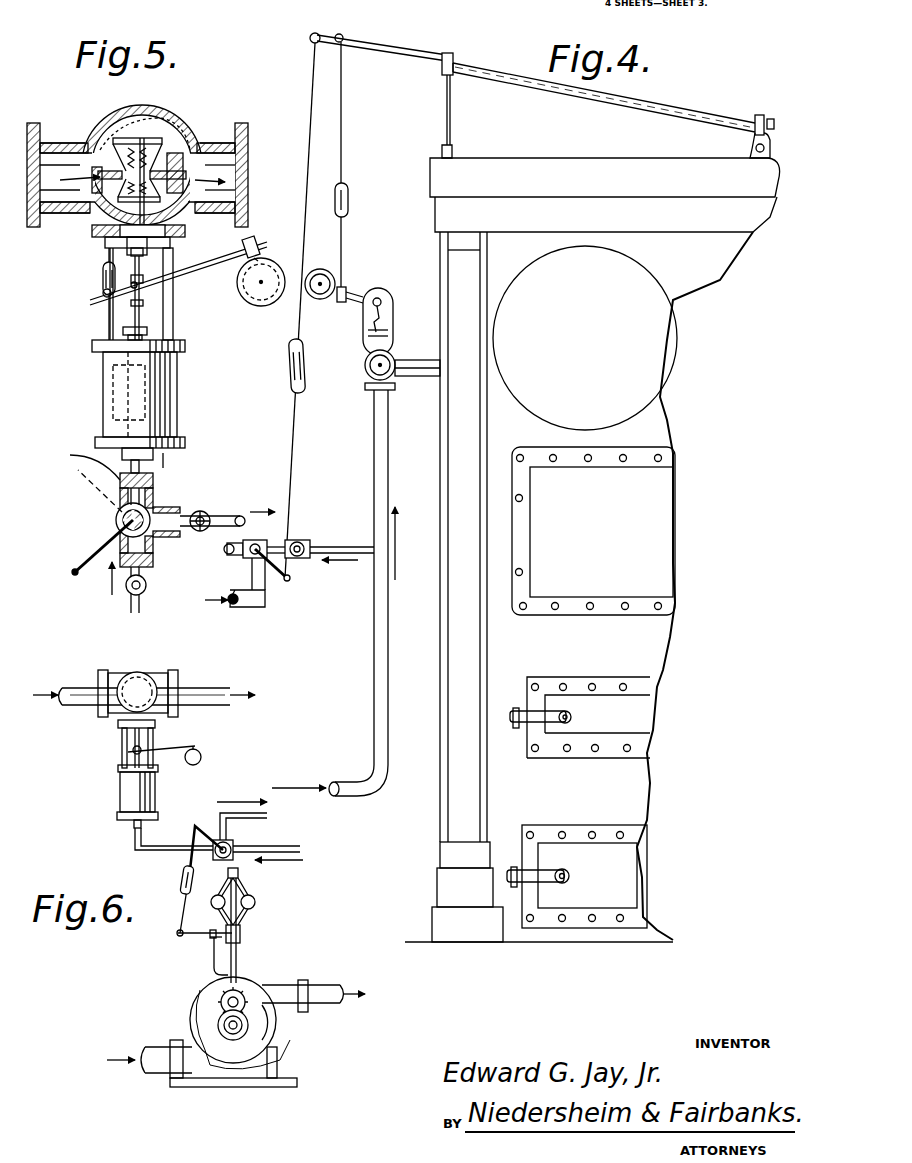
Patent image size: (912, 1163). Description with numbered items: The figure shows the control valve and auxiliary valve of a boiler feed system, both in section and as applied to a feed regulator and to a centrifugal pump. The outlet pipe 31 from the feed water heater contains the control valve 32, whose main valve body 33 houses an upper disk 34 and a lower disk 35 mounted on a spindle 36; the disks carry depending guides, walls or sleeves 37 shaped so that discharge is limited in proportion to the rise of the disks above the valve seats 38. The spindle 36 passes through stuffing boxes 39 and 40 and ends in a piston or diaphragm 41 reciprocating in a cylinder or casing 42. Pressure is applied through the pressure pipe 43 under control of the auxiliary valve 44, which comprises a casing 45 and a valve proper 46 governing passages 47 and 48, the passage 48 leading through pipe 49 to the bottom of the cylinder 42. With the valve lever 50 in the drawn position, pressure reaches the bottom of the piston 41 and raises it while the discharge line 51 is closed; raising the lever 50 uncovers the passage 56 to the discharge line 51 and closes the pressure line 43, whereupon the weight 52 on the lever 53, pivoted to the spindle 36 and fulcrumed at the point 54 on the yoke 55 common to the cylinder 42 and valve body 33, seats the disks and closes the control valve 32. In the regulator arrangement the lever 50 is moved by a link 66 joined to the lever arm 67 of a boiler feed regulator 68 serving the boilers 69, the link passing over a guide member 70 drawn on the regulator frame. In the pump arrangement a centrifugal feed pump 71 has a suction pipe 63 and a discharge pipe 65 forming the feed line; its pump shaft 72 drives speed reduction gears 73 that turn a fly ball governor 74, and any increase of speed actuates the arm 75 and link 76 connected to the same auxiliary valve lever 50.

In FIG. 5, the outlet pipe 31 is at (66, 178).
In FIG. 6, the outlet pipe 31 is at (75, 686).
In FIG. 5, the control valve 32 is at (148, 130).
In FIG. 6, the control valve 32 is at (133, 680).
In FIG. 5, the main valve body 33 is at (186, 175).
In FIG. 5, the upper disk 34 is at (108, 137).
In FIG. 5, the lower disk 35 is at (168, 172).
In FIG. 5, the spindle 36 is at (127, 244).
In FIG. 6, the spindle 36 is at (120, 737).
In FIG. 5, the depending guides, walls or sleeves 37 is at (132, 138).
In FIG. 5, the valve seats 38 is at (100, 132).
In FIG. 5, the stuffing box 39 is at (106, 262).
In FIG. 5, the stuffing box 40 is at (125, 332).
In FIG. 5, the piston or diaphragm 41 is at (113, 375).
In FIG. 5, the cylinder or casing 42 is at (177, 383).
In FIG. 6, the cylinder or casing 42 is at (120, 793).
In FIG. 5, the pressure pipe 43 is at (142, 597).
In FIG. 4, the pressure pipe 43 is at (329, 545).
In FIG. 6, the pressure pipe 43 is at (292, 846).
In FIG. 5, the auxiliary valve 44 is at (115, 522).
In FIG. 4, the auxiliary valve 44 is at (276, 540).
In FIG. 6, the auxiliary valve 44 is at (233, 846).
In FIG. 5, the casing 45 is at (150, 548).
In FIG. 5, the valve proper 46 is at (117, 518).
In FIG. 5, the passage 47 is at (160, 512).
In FIG. 5, the passage 48 is at (78, 461).
In FIG. 5, the pipe 49 is at (118, 478).
In FIG. 4, the pipe 49 is at (248, 560).
In FIG. 6, the pipe 49 is at (174, 836).
In FIG. 5, the valve lever 50 is at (72, 478).
In FIG. 4, the valve lever 50 is at (292, 578).
In FIG. 6, the valve lever 50 is at (195, 826).
In FIG. 5, the discharge line 51 is at (227, 505).
In FIG. 4, the discharge line 51 is at (240, 608).
In FIG. 6, the discharge line 51 is at (271, 814).
In FIG. 5, the weight 52 is at (255, 305).
In FIG. 6, the weight 52 is at (202, 756).
In FIG. 5, the lever 53 is at (180, 295).
In FIG. 6, the lever 53 is at (182, 746).
In FIG. 5, the fulcrum point 54 is at (100, 300).
In FIG. 6, the fulcrum point 54 is at (130, 752).
In FIG. 5, the yoke 55 is at (172, 312).
In FIG. 5, the passage 56 is at (171, 365).
In FIG. 6, the suction pipe 63 is at (158, 1075).
In FIG. 4, the discharge pipe 65 is at (372, 682).
In FIG. 6, the discharge pipe 65 is at (283, 984).
In FIG. 4, the link 66 is at (298, 462).
In FIG. 4, the lever arm 67 is at (388, 53).
In FIG. 4, the boiler feed regulator 68 is at (578, 97).
In FIG. 4, the boilers 69 is at (592, 550).
In FIG. 4, the bell crank 70 is at (392, 386).
In FIG. 6, the centrifugal feed pump 71 is at (233, 1032).
In FIG. 6, the pump shaft 72 is at (218, 1022).
In FIG. 6, the speed reduction gears 73 is at (222, 995).
In FIG. 6, the fly ball governor 74 is at (250, 900).
In FIG. 6, the arm 75 is at (183, 935).
In FIG. 6, the link 76 is at (176, 932).